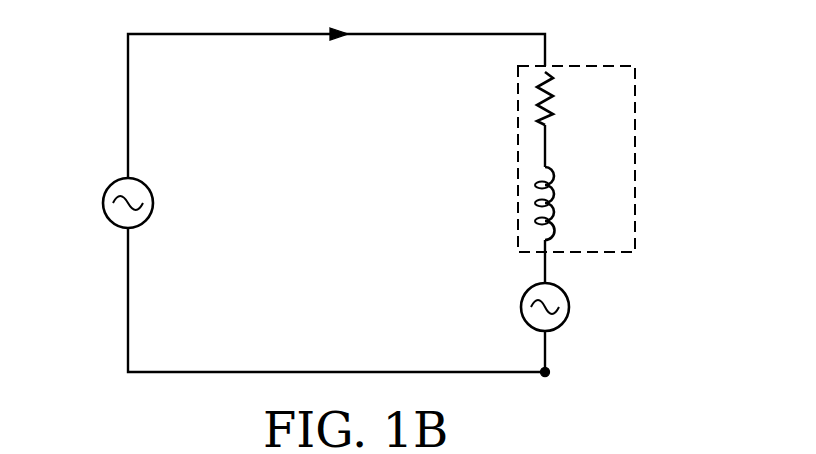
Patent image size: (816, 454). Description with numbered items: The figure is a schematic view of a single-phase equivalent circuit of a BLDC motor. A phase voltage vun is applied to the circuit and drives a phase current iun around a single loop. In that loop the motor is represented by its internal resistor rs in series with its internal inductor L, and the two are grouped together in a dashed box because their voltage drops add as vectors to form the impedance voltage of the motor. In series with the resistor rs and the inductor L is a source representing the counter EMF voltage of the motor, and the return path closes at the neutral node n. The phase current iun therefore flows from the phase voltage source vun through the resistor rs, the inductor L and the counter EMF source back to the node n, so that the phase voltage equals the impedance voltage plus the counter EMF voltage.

The phase current iun is at (332, 50).
The phase voltage vun is at (102, 203).
The internal resistor rs is at (554, 94).
The internal inductor L is at (556, 204).
The neutral node n is at (555, 373).